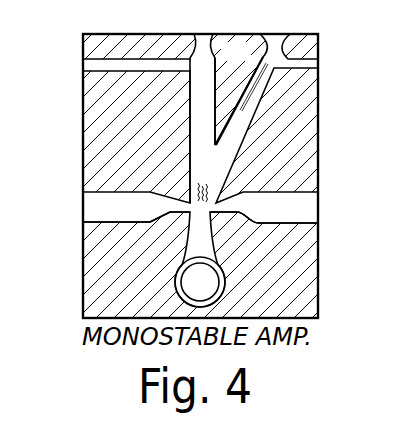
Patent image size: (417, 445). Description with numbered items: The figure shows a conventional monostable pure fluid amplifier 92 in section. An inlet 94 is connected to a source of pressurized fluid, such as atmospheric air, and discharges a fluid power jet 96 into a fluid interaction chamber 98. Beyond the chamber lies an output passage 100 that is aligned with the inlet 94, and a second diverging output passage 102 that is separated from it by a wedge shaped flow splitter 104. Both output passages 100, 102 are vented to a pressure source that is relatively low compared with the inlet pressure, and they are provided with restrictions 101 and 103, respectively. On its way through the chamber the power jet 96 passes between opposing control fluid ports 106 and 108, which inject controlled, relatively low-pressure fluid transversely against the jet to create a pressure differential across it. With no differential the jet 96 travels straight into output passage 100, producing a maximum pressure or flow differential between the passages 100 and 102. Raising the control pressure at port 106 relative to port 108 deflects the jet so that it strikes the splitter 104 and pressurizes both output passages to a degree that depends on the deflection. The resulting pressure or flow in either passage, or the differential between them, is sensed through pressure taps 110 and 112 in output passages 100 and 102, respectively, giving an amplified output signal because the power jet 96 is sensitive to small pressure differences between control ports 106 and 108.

The monostable fluid amplifier 92 is at (320, 108).
The inlet 94 is at (212, 294).
The fluid power jet 96 is at (196, 195).
The fluid interaction chamber 98 is at (225, 166).
The output passage 100 is at (189, 84).
The restriction 101 is at (203, 34).
The second diverging output passage 102 is at (260, 110).
The restriction 103 is at (271, 35).
The wedge shaped flow splitter 104 is at (248, 60).
The control fluid port 106 is at (182, 207).
The control fluid port 108 is at (226, 204).
The pressure tap 110 is at (83, 63).
The pressure tap 112 is at (309, 67).